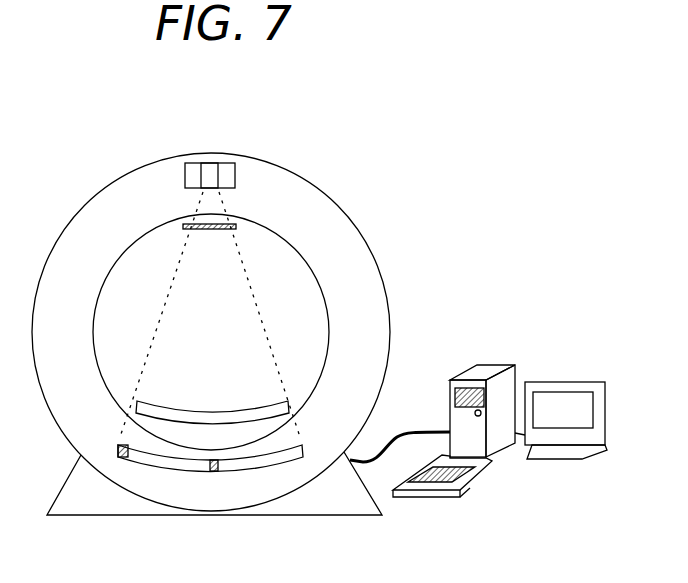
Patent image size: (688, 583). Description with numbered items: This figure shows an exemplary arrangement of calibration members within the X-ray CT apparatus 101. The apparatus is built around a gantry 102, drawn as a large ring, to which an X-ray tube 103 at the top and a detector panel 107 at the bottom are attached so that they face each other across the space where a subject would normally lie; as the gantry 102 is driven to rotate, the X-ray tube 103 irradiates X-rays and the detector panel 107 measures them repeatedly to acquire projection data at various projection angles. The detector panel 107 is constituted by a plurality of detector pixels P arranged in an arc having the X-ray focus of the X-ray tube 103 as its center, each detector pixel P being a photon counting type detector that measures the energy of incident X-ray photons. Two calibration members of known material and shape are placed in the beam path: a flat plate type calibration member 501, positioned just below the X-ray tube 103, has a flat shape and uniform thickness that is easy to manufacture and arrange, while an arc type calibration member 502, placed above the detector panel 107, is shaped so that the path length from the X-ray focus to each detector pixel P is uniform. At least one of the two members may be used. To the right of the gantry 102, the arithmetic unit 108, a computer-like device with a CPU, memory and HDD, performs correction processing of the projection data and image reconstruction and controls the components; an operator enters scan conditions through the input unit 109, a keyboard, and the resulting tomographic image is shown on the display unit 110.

The X-ray CT apparatus 101 is at (333, 163).
The gantry 102 is at (333, 230).
The X-ray tube 103 is at (193, 170).
The flat plate type calibration member 501 is at (217, 230).
The arc type calibration member 502 is at (165, 412).
The detector panel 107 is at (195, 472).
The detector pixel P is at (218, 470).
The arithmetic unit 108 is at (490, 367).
The input unit 109 is at (487, 478).
The display unit 110 is at (572, 382).